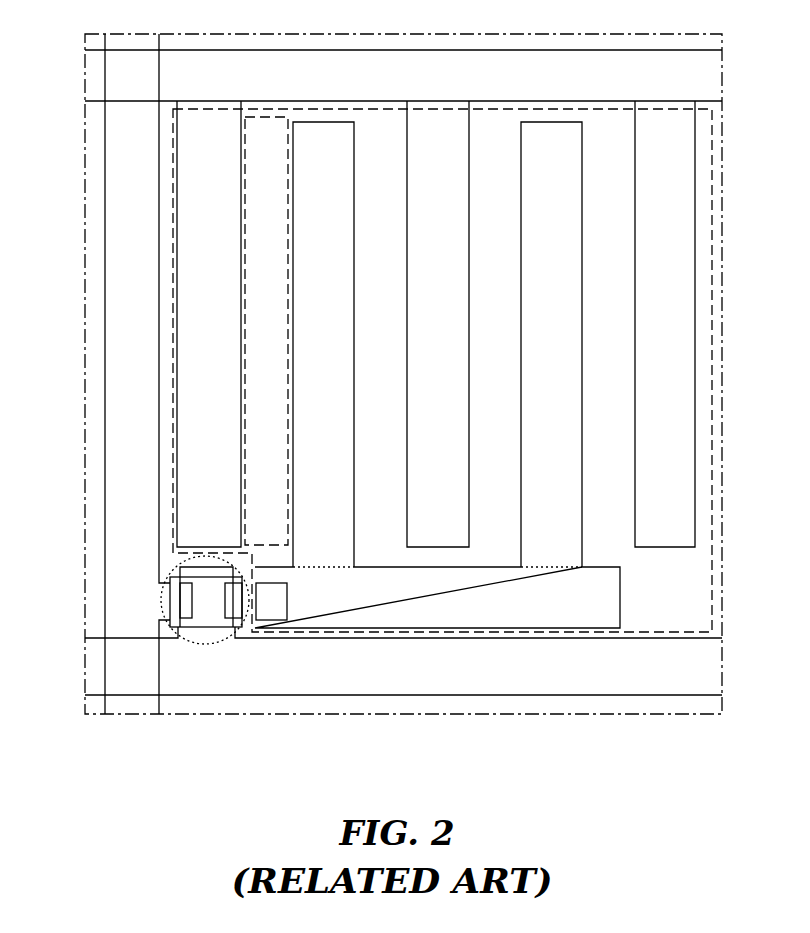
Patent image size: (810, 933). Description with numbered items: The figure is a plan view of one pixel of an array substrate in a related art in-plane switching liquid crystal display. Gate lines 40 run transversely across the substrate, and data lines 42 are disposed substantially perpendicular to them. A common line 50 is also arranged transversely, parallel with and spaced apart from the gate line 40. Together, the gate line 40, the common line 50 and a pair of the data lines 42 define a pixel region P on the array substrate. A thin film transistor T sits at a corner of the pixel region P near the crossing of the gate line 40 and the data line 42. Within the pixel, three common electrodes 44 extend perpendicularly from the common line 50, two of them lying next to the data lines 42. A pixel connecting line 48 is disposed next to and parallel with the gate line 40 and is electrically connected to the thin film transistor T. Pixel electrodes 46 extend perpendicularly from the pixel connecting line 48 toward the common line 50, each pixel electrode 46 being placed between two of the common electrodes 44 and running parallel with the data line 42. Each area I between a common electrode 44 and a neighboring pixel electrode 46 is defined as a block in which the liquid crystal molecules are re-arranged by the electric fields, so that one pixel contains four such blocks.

The gate line 40 is at (722, 638).
The data line 42 is at (159, 718).
The common electrode 44 is at (219, 174).
The pixel electrode 46 is at (338, 249).
The pixel connecting line 48 is at (614, 603).
The common line 50 is at (722, 50).
The area I is at (240, 259).
The pixel region P is at (165, 361).
The thin film transistor T is at (205, 645).